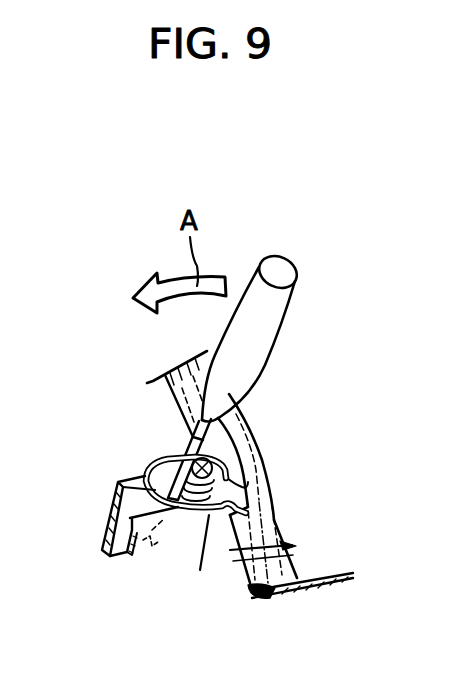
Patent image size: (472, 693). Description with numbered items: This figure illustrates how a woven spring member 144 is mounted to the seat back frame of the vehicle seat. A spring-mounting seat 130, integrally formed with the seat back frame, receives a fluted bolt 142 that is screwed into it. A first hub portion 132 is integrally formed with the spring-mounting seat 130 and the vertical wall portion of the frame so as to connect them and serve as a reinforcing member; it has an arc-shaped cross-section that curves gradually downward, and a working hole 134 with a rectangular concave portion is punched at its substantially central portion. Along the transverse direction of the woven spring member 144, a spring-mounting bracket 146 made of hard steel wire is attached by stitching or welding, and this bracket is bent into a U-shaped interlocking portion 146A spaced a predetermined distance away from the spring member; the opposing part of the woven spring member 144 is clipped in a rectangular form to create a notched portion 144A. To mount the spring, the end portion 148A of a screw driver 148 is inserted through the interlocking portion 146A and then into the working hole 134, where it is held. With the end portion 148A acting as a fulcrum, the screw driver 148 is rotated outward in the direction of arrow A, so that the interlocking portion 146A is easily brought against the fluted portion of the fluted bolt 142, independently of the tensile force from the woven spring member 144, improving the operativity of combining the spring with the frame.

The spring-mounting seat 130 is at (188, 543).
The first hub portion 132 is at (138, 480).
The working hole 134 is at (128, 511).
The fluted bolt 142 is at (238, 436).
The woven spring member 144 is at (250, 553).
The sleeve portion 144A is at (232, 467).
The spring-mounting bracket 146 is at (238, 543).
The interlocking portion 146A is at (160, 457).
The screw driver 148 is at (261, 327).
The end portion 148A is at (145, 530).